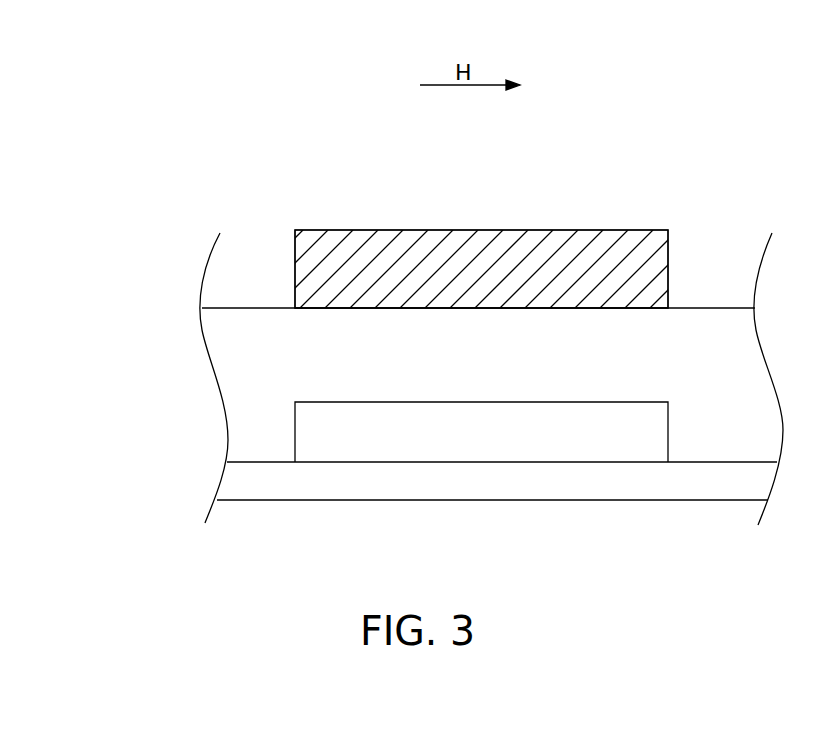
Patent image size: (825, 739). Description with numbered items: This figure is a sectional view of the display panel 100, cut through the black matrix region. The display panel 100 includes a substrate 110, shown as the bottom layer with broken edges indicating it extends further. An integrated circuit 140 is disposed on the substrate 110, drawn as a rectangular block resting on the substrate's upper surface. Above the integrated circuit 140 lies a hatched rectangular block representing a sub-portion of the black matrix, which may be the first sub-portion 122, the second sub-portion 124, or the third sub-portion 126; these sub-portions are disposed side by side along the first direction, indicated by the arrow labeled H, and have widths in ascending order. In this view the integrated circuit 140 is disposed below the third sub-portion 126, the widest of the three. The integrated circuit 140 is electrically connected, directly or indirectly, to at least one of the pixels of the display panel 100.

The display panel 100 is at (70, 46).
The substrate 110 is at (243, 477).
The first sub-portion 122 is at (408, 230).
The second sub-portion 124 is at (476, 269).
The third sub-portion 126 is at (481, 269).
The integrated circuit 140 is at (413, 445).